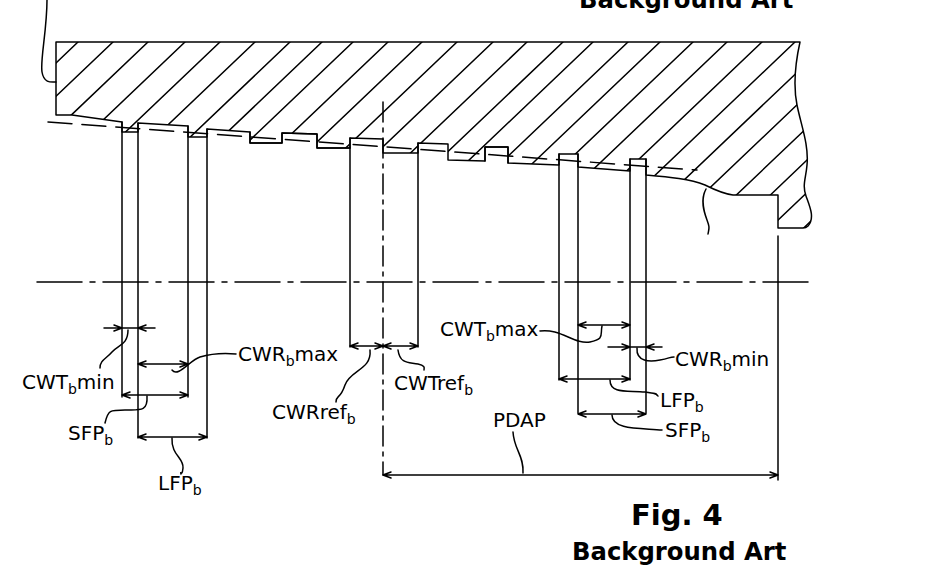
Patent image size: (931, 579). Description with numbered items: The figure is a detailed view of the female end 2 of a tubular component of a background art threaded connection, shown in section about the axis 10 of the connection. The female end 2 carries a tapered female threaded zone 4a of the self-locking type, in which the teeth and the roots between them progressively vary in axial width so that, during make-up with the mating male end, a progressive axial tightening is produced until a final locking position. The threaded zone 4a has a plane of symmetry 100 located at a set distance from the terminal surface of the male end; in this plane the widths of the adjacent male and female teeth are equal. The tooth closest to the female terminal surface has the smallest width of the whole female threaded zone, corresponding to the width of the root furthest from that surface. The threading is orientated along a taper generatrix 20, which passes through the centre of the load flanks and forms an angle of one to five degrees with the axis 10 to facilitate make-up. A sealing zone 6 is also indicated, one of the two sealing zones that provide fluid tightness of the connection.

The female end 2 is at (442, 73).
The female threaded zone 4a is at (308, 117).
The sealing zone 6 is at (740, 334).
The axis 10 is at (64, 282).
The taper generatrix 20 is at (475, 148).
The plane of symmetry 100 is at (383, 119).